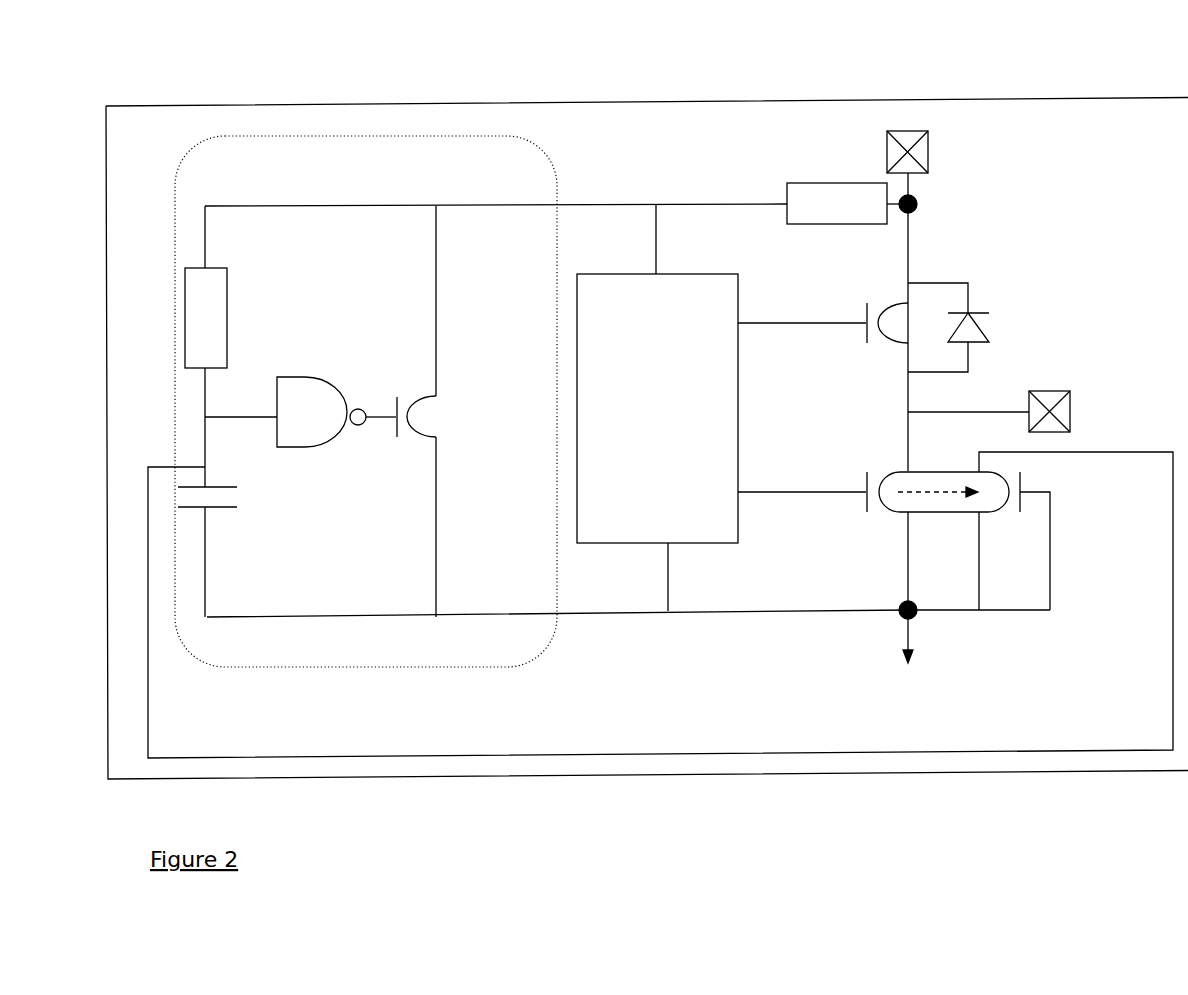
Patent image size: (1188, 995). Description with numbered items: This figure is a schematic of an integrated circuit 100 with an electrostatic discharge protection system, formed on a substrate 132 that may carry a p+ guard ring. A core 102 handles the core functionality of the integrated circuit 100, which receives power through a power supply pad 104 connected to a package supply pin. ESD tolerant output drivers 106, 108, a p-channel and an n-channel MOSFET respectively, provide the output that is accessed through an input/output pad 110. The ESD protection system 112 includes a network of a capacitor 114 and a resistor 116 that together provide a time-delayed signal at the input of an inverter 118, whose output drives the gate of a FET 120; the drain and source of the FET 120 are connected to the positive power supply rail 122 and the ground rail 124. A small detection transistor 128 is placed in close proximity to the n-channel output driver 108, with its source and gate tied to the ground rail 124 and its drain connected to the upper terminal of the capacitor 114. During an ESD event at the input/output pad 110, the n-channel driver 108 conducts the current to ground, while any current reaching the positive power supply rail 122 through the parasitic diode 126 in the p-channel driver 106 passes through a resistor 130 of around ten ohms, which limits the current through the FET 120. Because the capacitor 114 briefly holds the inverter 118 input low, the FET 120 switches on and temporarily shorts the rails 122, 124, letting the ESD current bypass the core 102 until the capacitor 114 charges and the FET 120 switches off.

The integrated circuit 100 is at (1052, 88).
The core 102 is at (730, 533).
The power supply pad 104 is at (915, 155).
The p-channel MOSFET output driver 106 is at (898, 322).
The n-channel MOSFET output driver 108 is at (898, 482).
The input/output pad 110 is at (1060, 412).
The ESD protection system 112 is at (442, 667).
The capacitor 114 is at (237, 497).
The resistor 116 is at (217, 316).
The inverter 118 is at (305, 387).
The FET 120 is at (437, 407).
The positive power supply rail 122 is at (727, 203).
The ground rail 124 is at (748, 615).
The parasitic diode 126 is at (978, 332).
The detection transistor 128 is at (999, 522).
The resistor 130 is at (845, 193).
The substrate 132 is at (397, 106).